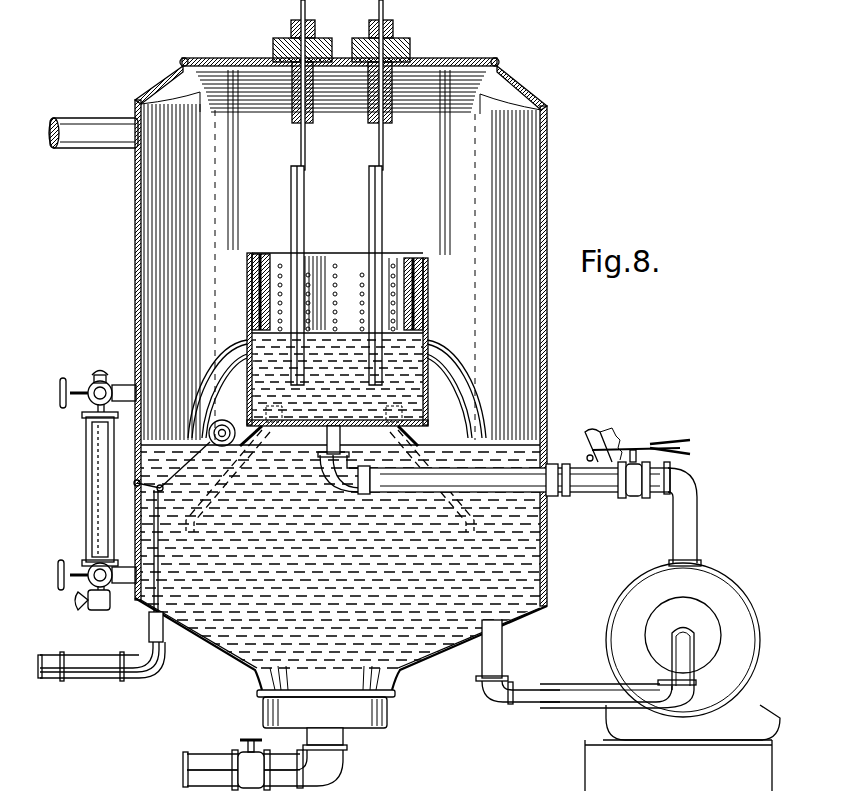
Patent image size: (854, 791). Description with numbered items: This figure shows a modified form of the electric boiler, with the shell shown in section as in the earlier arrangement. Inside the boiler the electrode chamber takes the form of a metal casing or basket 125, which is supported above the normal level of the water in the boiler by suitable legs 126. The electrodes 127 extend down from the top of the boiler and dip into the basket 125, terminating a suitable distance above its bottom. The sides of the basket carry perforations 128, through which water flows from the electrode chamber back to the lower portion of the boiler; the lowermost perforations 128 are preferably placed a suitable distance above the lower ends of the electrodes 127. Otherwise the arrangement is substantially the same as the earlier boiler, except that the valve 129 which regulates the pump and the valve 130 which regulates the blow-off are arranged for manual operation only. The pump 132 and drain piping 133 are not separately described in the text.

The metal casing or basket 125 is at (428, 302).
The legs 126 is at (282, 440).
The electrodes 127 is at (303, 214).
The perforations 128 is at (428, 320).
The valve 129 is at (640, 478).
The valve 130 is at (246, 760).
The pump or blower 132 is at (585, 677).
The drain pipe 133 is at (200, 786).